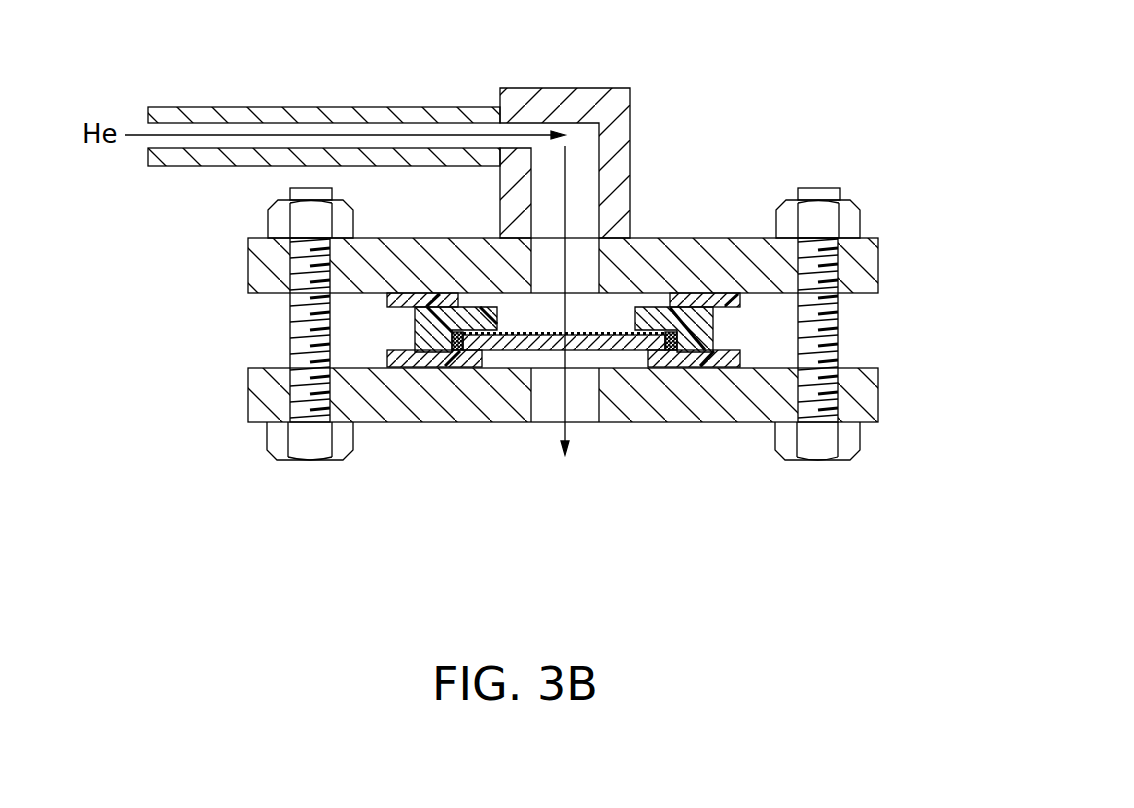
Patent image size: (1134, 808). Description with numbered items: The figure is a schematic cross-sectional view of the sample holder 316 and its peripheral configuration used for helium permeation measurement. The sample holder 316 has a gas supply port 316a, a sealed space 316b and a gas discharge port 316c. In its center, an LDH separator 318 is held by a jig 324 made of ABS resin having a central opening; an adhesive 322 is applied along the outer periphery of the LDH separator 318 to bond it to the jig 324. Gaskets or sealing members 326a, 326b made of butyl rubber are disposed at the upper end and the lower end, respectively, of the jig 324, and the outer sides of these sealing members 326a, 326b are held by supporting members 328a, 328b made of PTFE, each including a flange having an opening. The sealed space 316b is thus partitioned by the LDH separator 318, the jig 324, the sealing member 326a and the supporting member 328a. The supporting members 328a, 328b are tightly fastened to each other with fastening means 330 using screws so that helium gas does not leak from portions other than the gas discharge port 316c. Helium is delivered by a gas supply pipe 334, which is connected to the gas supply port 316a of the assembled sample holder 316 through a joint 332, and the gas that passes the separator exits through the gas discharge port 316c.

The sample holder 316 is at (792, 88).
The gas supply port 316a is at (600, 275).
The sealed space 316b is at (527, 318).
The gas discharge port 316c is at (530, 405).
The LDH separator 318 is at (607, 333).
The adhesive 322 is at (670, 367).
The jig 324 is at (698, 327).
The sealing member 326a is at (740, 305).
The sealing member 326b is at (740, 357).
The supporting member 328a is at (863, 263).
The supporting member 328b is at (865, 392).
The fastening means 330 is at (818, 462).
The joint 332 is at (551, 102).
The gas supply pipe 334 is at (348, 115).